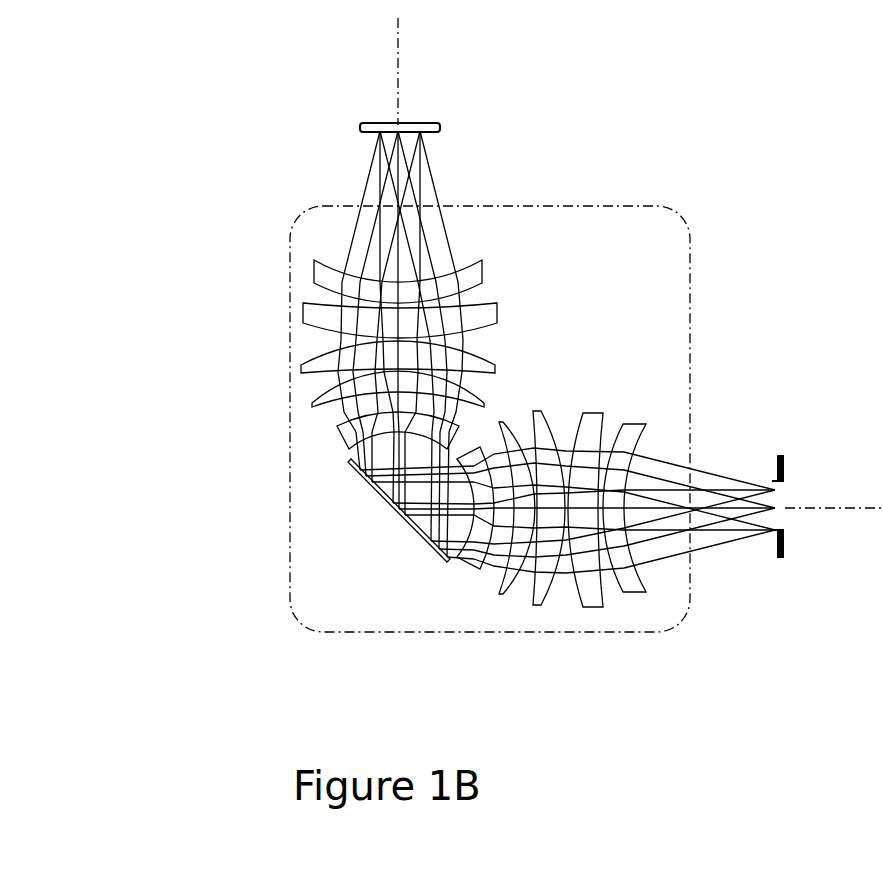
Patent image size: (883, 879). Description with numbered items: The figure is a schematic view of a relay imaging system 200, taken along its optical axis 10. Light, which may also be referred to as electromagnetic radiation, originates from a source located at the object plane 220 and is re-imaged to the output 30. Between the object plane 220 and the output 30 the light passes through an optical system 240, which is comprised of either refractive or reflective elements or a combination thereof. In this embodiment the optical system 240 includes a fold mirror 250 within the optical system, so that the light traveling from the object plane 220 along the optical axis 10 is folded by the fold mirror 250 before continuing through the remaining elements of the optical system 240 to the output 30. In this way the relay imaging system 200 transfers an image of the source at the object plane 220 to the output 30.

The optical axis 10 is at (395, 63).
The output 30 is at (781, 560).
The relay imaging system 200 is at (216, 291).
The object plane 220 is at (360, 127).
The optical system 240 is at (550, 206).
The fold mirror 250 is at (402, 525).